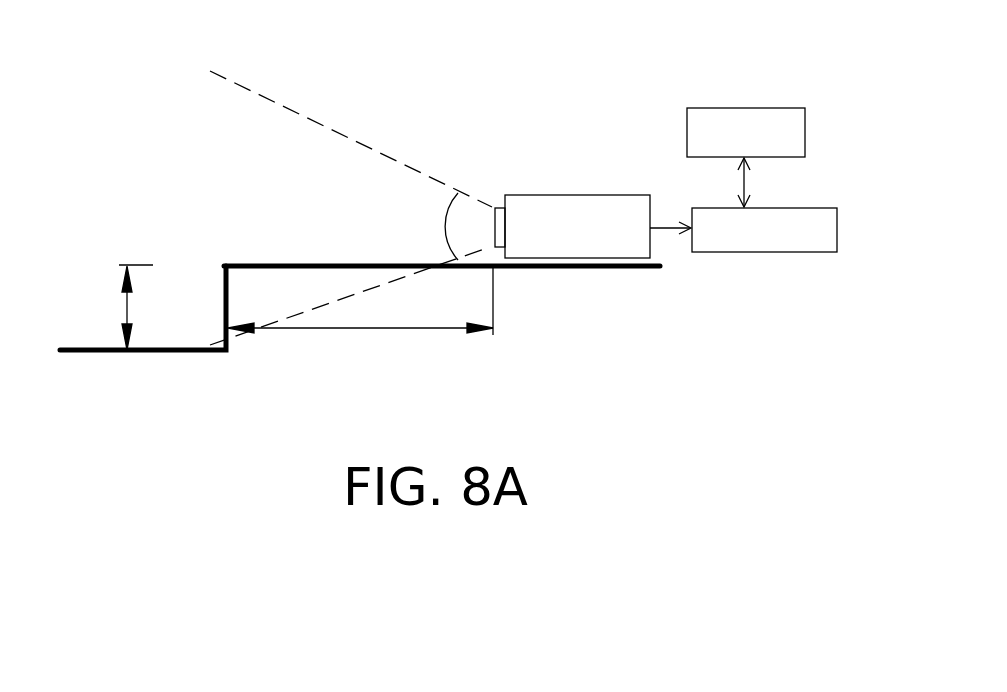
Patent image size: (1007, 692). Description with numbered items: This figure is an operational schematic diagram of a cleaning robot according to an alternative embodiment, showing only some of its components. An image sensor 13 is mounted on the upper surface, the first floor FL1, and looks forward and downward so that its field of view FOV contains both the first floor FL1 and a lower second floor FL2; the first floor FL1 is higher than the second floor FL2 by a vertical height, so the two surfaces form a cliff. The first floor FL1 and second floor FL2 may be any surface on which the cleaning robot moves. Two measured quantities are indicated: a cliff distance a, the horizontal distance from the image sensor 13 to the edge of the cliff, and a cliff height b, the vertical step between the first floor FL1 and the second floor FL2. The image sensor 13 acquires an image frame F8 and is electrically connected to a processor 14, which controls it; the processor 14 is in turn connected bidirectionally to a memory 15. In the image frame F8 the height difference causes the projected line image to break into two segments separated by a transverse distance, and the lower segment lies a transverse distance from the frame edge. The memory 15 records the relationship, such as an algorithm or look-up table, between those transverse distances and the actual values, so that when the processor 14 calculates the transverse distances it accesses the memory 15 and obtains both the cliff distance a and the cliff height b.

The image sensor 13 is at (563, 203).
The processor 14 is at (743, 252).
The memory 15 is at (746, 108).
The first floor FL1 is at (590, 270).
The second floor FL2 is at (172, 353).
The image frame F8 is at (670, 210).
The field of view FOV is at (351, 208).
The cliff distance a is at (360, 301).
The cliff height b is at (125, 307).